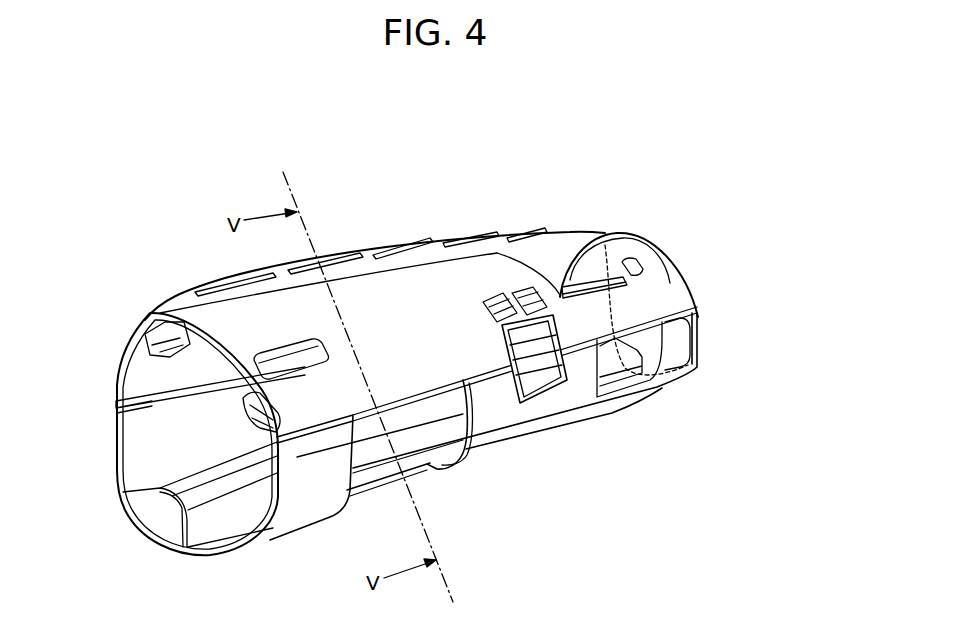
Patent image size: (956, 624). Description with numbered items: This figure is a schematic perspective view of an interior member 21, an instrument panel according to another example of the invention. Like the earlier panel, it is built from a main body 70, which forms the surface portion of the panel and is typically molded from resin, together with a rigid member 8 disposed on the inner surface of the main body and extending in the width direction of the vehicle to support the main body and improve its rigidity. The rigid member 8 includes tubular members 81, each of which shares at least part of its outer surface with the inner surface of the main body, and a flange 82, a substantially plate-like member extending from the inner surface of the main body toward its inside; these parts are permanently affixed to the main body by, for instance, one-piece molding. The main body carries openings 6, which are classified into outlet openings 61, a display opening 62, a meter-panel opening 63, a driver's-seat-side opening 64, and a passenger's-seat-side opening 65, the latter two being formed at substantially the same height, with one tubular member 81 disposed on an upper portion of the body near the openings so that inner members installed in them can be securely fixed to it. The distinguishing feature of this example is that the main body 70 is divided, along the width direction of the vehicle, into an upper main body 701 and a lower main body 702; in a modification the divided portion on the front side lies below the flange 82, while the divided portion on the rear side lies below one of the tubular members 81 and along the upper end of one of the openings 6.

The interior member 21 is at (712, 245).
The openings 6 is at (428, 474).
The rigid member 8 is at (57, 368).
The tubular members 81 is at (148, 335).
The flange 82 is at (160, 393).
The outlet openings 61 is at (280, 357).
The display opening 62 is at (558, 388).
The meter-panel opening 63 is at (621, 262).
The driver's-seat-side opening 64 is at (655, 346).
The passenger's-seat-side opening 65 is at (455, 418).
The main body 70 is at (800, 278).
The upper main body 701 is at (687, 282).
The lower main body 702 is at (687, 318).